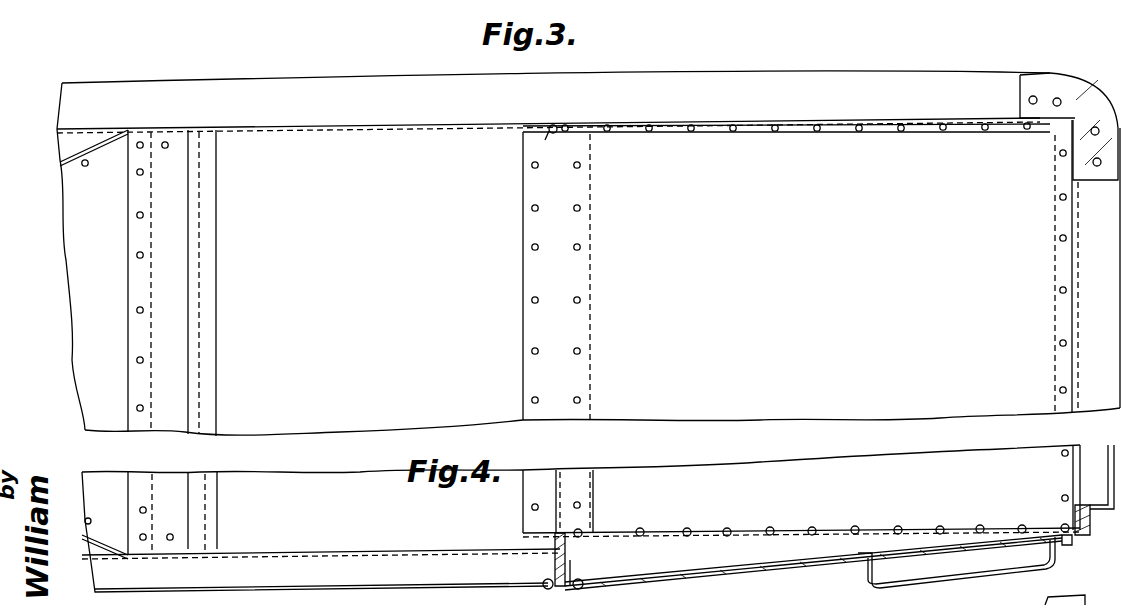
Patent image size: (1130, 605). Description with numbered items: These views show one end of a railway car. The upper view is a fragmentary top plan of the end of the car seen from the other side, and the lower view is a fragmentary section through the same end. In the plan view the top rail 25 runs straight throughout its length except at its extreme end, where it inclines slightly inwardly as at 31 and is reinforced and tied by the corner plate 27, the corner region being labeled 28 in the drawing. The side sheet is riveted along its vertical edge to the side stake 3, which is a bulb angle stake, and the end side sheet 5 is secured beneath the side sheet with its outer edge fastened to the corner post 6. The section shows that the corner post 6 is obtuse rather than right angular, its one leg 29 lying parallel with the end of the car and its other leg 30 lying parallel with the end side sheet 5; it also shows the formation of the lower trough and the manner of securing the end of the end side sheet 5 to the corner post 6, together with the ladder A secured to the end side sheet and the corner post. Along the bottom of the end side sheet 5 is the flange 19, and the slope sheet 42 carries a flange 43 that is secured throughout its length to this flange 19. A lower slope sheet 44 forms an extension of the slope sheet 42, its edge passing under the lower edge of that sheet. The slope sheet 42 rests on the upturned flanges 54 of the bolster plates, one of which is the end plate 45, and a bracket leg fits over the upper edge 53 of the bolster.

In FIG. 3, the side stake 3 is at (548, 134).
In FIG. 4, the side stake 3 is at (554, 566).
In FIG. 4, the end side sheet 5 is at (775, 570).
In FIG. 4, the corner post 6 is at (1086, 532).
In FIG. 4, the flange 19 is at (706, 537).
In FIG. 3, the top rail 25 is at (766, 90).
In FIG. 3, the corner plate 27 is at (1072, 100).
In FIG. 3, the corner post 28 is at (1095, 268).
In FIG. 4, the leg 29 is at (1088, 518).
In FIG. 4, the leg 30 is at (1068, 545).
In FIG. 3, the inclined end of top rail 31 is at (974, 78).
In FIG. 3, the slope sheet 42 is at (786, 276).
In FIG. 4, the slope sheet 42 is at (801, 489).
In FIG. 3, the flange 43 is at (748, 132).
In FIG. 4, the flange 43 is at (746, 534).
In FIG. 3, the lower slope sheet 44 is at (588, 259).
In FIG. 4, the lower slope sheet 44 is at (321, 514).
In FIG. 4, the end plate 45 is at (566, 500).
In FIG. 4, the upper edge of bolster 53 is at (572, 568).
In FIG. 4, the upturned flanges 54 is at (594, 520).
In FIG. 4, the ladder A is at (925, 582).